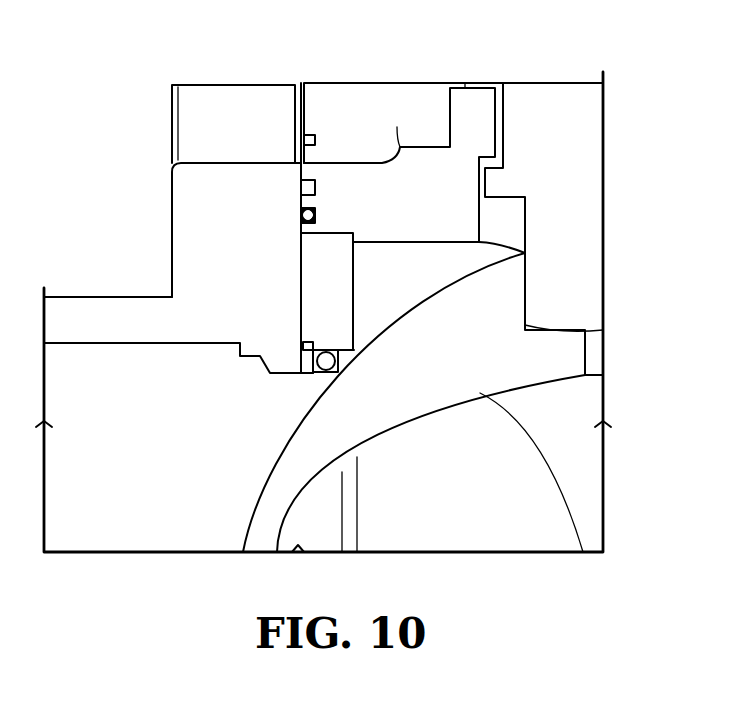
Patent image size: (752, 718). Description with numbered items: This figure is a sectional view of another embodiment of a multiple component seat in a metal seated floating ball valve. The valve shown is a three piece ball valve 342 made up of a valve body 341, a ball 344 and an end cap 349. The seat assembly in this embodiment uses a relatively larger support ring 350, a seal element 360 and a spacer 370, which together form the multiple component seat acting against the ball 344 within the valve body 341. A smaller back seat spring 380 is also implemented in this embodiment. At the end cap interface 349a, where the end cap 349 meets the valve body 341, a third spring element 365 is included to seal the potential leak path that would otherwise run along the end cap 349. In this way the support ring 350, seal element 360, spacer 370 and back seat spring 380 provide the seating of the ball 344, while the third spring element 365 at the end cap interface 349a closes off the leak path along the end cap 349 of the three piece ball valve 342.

The three piece ball valve 342 is at (160, 58).
The valve body 341 is at (453, 229).
The ball 344 is at (515, 275).
The end cap 349 is at (193, 252).
The end cap interface 349a is at (298, 203).
The support ring 350 is at (327, 291).
The seal element 360 is at (338, 362).
The third spring element 365 is at (301, 214).
The spacer 370 is at (315, 376).
The back seat spring 380 is at (307, 345).